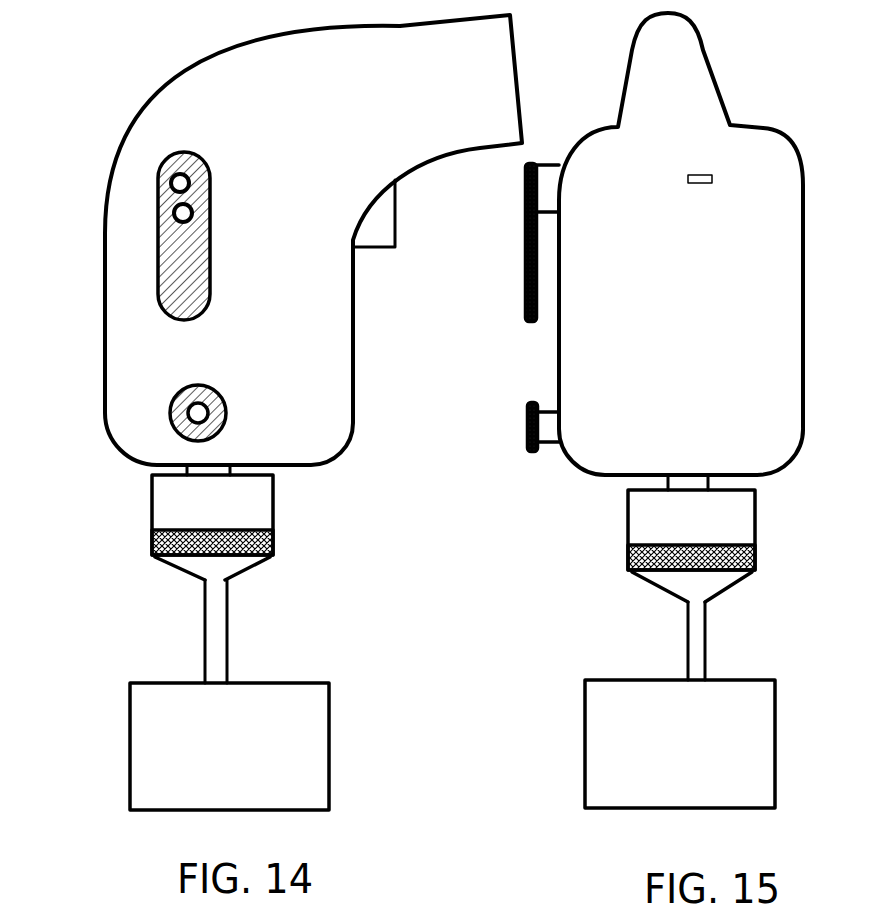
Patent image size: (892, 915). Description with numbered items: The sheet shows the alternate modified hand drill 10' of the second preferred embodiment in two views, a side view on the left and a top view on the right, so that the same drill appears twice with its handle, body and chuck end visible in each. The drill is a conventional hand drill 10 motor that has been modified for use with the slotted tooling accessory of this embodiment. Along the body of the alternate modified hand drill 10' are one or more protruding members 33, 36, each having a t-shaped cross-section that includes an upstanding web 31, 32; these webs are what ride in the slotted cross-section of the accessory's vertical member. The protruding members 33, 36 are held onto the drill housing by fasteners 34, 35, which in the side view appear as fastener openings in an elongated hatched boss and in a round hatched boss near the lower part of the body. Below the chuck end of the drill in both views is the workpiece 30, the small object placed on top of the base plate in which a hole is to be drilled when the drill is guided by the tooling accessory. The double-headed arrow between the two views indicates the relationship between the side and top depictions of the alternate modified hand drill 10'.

In FIG. 14, the hand drill 10 is at (476, 909).
In FIG. 14, the alternate modified hand drill 10' is at (471, 364).
In FIG. 14, the workpiece 30 is at (277, 713).
In FIG. 15, the workpiece 30 is at (657, 743).
In FIG. 15, the upstanding web 31 is at (562, 197).
In FIG. 15, the upstanding web 32 is at (565, 428).
In FIG. 14, the protruding member 33 is at (225, 287).
In FIG. 14, the fastener 34 is at (157, 184).
In FIG. 14, the fastener 35 is at (178, 432).
In FIG. 14, the protruding member 36 is at (242, 422).